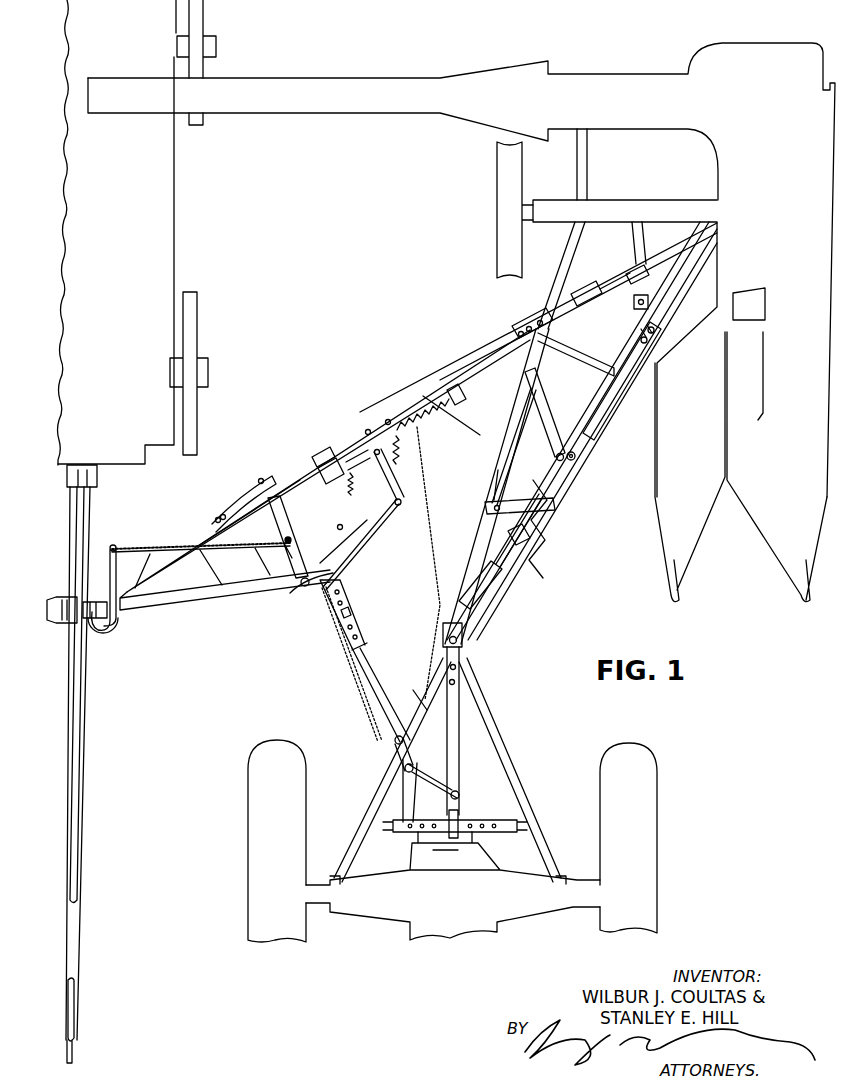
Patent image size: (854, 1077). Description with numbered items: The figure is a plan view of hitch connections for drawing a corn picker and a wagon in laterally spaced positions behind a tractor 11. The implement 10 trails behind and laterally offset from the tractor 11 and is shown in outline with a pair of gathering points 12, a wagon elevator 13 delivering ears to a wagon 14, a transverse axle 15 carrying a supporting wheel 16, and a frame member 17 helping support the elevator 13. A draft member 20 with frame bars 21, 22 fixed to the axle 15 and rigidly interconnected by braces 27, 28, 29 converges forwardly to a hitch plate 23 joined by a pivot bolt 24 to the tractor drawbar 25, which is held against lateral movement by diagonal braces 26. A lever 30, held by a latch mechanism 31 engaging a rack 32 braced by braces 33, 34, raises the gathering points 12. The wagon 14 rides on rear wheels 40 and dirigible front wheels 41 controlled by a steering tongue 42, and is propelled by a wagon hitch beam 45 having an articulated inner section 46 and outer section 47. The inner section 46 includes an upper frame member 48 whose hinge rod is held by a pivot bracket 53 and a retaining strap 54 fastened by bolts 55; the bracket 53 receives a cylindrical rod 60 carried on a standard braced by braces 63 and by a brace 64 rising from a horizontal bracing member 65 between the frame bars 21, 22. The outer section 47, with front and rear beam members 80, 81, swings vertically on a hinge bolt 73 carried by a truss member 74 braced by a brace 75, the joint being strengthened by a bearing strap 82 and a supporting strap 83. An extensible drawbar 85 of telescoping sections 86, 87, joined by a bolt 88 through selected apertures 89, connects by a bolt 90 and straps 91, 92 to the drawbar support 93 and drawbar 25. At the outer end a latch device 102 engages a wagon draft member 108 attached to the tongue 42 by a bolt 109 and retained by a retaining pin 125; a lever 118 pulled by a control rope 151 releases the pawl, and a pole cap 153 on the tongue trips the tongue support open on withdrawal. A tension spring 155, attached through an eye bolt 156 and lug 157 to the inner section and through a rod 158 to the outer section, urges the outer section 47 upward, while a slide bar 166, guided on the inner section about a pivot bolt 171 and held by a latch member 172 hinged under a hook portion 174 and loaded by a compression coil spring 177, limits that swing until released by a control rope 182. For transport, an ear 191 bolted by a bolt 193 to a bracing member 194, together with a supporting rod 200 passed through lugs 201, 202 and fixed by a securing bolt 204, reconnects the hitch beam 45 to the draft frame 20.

The corn picker implement 10 is at (632, 53).
The tractor 11 is at (458, 901).
The gathering points 12 is at (700, 536).
The wagon elevator 13 is at (360, 85).
The wagon 14 is at (118, 236).
The transverse axle 15 is at (608, 206).
The supporting wheel 16 is at (500, 180).
The frame member 17 is at (584, 155).
The draft member 20 is at (480, 490).
The frame bar 21 is at (549, 352).
The frame bar 22 is at (598, 390).
The hitch plate 23 is at (450, 630).
The pivot bolt 24 is at (462, 642).
The drawbar 25 is at (456, 750).
The diagonal braces 26 is at (378, 802).
The brace 27 is at (505, 472).
The brace 28 is at (553, 435).
The brace 29 is at (582, 360).
The lever 30 is at (488, 608).
The latch mechanism 31 is at (518, 548).
The rack 32 is at (528, 540).
The brace 33 is at (542, 505).
The brace 34 is at (551, 460).
The rear wheels 40 is at (205, 20).
The dirigible front wheels 41 is at (195, 330).
The steering tongue 42 is at (88, 522).
The wagon hitch beam 45 is at (275, 438).
The inner hitch beam section 46 is at (336, 460).
The outer hitch beam section 47 is at (219, 612).
The upper frame member 48 is at (423, 394).
The pivot bracket 53 is at (556, 321).
The retaining strap 54 is at (537, 324).
The bolts 55 is at (516, 333).
The cylindrical rod 60 is at (588, 306).
The braces 63 is at (560, 278).
The brace 64 is at (650, 253).
The horizontal bracing member 65 is at (610, 272).
The hinge bolt 73 is at (262, 479).
The truss member 74 is at (381, 522).
The brace 75 is at (388, 484).
The front beam member 80 is at (266, 592).
The rear beam member 81 is at (190, 547).
The bearing strap 82 is at (238, 503).
The supporting strap 83 is at (358, 514).
The extensible drawbar 85 is at (359, 595).
The front drawbar section 86 is at (382, 690).
The rear drawbar section 87 is at (303, 512).
The bolt 88 is at (343, 614).
The apertures 89 is at (352, 630).
The bolt 90 is at (414, 766).
The strap 91 is at (410, 814).
The strap 92 is at (432, 778).
The drawbar support 93 is at (481, 822).
The latch device 102 is at (68, 624).
The wagon draft member 108 is at (80, 661).
The bolt 109 is at (95, 495).
The lever 118 is at (112, 632).
The retaining pin 125 is at (122, 614).
The control rope 151 is at (366, 706).
The pole cap 153 is at (74, 1052).
The tension spring 155 is at (433, 400).
The eye bolt 156 is at (447, 404).
The lug 157 is at (466, 390).
The rod 158 is at (334, 482).
The slide bar 166 is at (320, 456).
The pivot bolt 171 is at (368, 430).
The latch member 172 is at (389, 420).
The hook portion 174 is at (367, 472).
The compression coil spring 177 is at (406, 446).
The control rope 182 is at (432, 545).
The ear 191 is at (628, 325).
The bolt 193 is at (650, 318).
The horizontal bracing member 194 is at (639, 300).
The supporting rod 200 is at (613, 394).
The lug 201 is at (576, 458).
The lug 202 is at (648, 342).
The securing bolt 204 is at (654, 332).